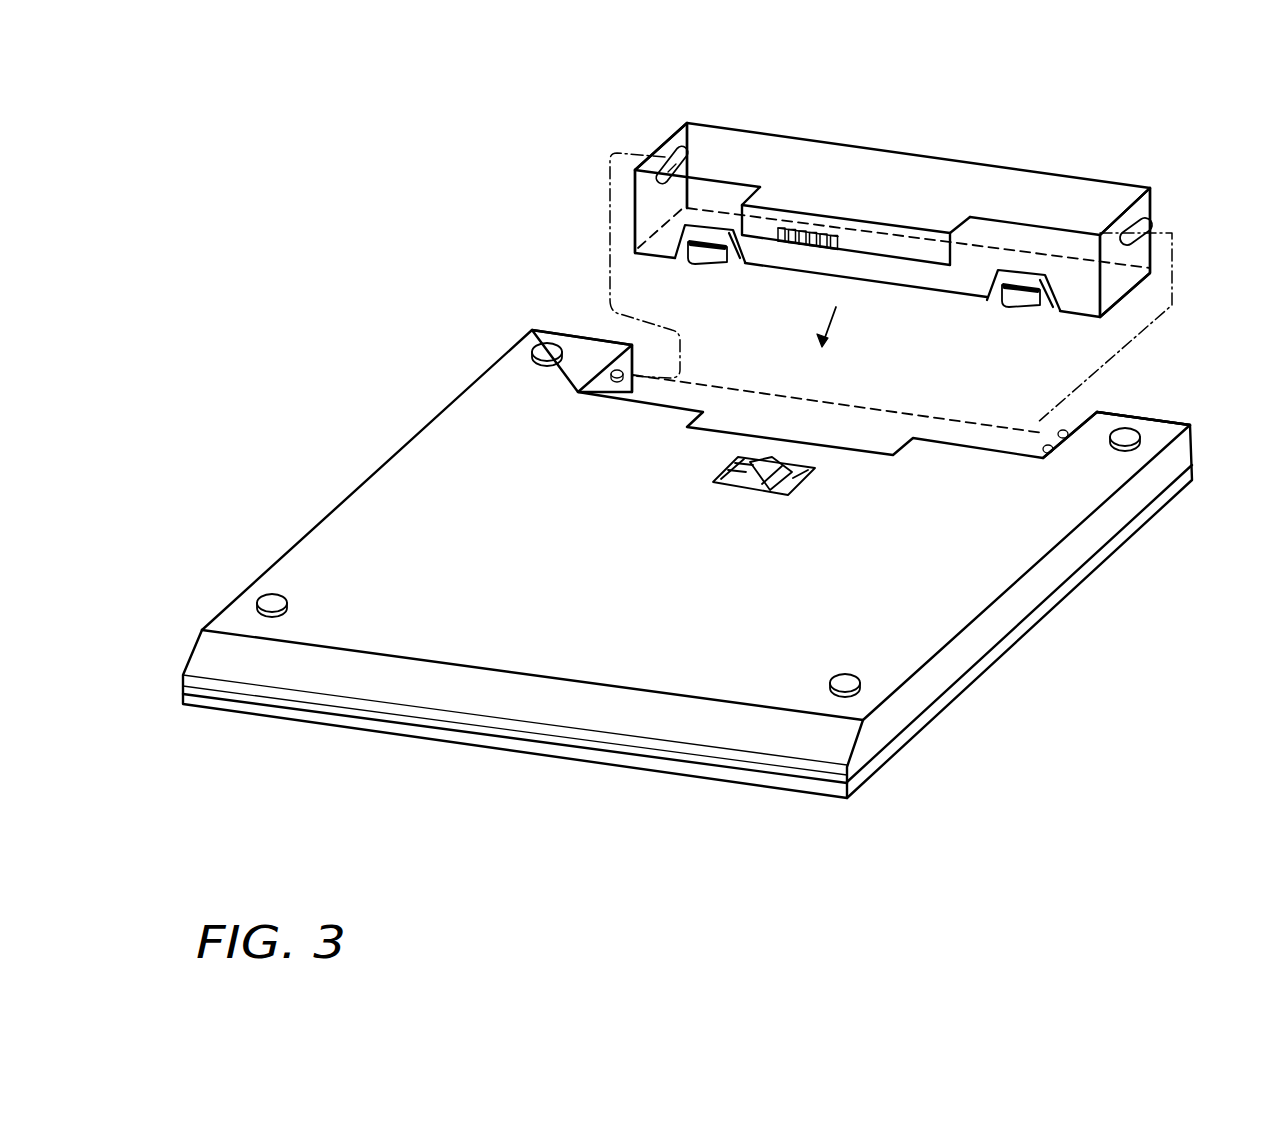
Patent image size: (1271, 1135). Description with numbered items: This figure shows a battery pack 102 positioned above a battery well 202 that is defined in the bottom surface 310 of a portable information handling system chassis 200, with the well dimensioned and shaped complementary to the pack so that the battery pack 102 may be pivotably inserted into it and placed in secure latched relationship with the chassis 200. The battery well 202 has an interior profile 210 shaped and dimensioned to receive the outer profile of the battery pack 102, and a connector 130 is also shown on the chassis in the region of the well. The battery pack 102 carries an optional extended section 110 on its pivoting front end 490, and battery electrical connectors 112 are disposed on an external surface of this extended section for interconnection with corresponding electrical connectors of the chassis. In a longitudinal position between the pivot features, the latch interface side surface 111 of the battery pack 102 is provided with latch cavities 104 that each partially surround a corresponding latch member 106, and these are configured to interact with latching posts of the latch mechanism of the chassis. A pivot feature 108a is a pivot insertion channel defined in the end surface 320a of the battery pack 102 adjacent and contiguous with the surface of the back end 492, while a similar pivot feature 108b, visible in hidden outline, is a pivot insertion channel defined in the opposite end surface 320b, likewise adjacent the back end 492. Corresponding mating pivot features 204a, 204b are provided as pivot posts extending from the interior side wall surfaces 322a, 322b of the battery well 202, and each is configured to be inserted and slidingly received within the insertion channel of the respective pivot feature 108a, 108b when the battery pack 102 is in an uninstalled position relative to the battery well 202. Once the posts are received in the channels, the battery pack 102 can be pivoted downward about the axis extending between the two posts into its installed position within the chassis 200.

The battery pack 102 is at (677, 132).
The latch cavities 104 is at (733, 246).
The latch member 106 is at (702, 252).
The pivot feature 108a is at (1143, 222).
The pivot feature 108b is at (672, 150).
The extended section 110 is at (971, 218).
The latch interface side surface 111 is at (648, 223).
The battery electrical connectors 112 is at (816, 232).
The base connector 130 is at (716, 470).
The portable information handling system chassis 200 is at (1180, 464).
The battery well 202 is at (927, 421).
The pivot feature 204a is at (1065, 435).
The pivot feature 204b is at (598, 385).
The interior profile 210 is at (781, 434).
The bottom surface 310 is at (1170, 430).
The end surface 320a is at (1113, 230).
The end surface 320b is at (633, 198).
The interior side wall surface 322a is at (1057, 447).
The interior sidewall surface 322b is at (609, 370).
The pivoting front end 490 is at (874, 245).
The back end 492 is at (1153, 190).